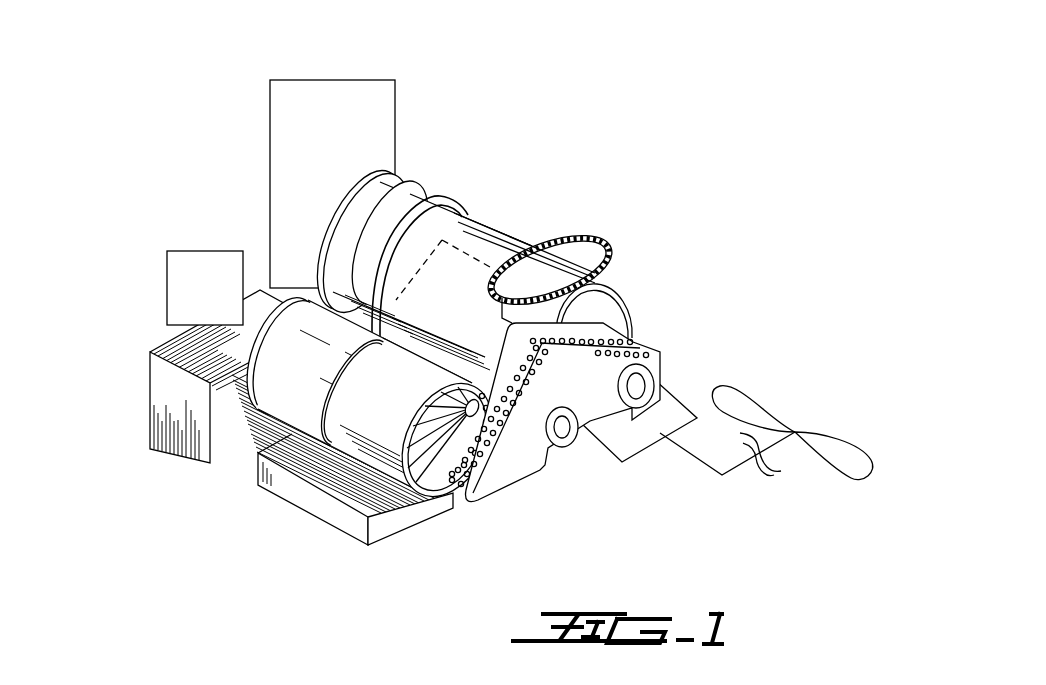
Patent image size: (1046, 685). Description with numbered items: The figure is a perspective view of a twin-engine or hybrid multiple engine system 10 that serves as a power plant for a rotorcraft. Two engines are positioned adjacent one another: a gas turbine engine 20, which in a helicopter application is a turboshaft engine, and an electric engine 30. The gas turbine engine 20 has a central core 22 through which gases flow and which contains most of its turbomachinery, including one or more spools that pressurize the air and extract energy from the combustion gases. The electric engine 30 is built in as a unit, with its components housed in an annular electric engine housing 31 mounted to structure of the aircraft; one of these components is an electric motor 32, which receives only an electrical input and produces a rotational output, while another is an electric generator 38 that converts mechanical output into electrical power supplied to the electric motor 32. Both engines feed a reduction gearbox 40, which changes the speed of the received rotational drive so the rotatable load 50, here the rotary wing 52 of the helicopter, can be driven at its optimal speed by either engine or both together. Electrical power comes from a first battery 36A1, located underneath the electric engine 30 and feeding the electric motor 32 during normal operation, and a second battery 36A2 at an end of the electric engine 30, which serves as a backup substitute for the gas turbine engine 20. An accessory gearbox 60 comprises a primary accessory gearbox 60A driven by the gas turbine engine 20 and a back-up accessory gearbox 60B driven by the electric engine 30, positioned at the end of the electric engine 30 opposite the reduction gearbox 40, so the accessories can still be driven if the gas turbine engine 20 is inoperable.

The multiple engine system 10 is at (601, 140).
The gas turbine engine 20 is at (466, 249).
The central core 22 is at (460, 247).
The electric engine 30 is at (327, 441).
The annular electric engine housing 31 is at (318, 436).
The electric motor 32 is at (262, 402).
The first battery 36A1 is at (304, 538).
The second battery 36A2 is at (152, 400).
The electric generator 38 is at (385, 460).
The reduction gearbox 40 is at (655, 325).
The rotatable load 50 is at (793, 389).
The rotary wing 52 is at (757, 388).
The accessory gearbox 60 is at (330, 150).
The primary accessory gearbox 60A is at (328, 76).
The back-up accessory gearbox 60B is at (185, 250).